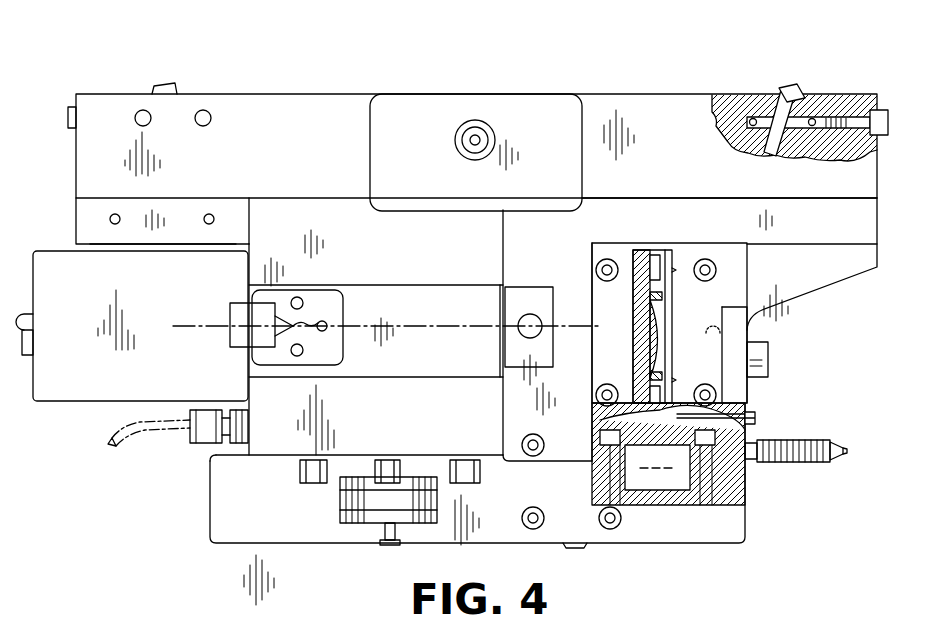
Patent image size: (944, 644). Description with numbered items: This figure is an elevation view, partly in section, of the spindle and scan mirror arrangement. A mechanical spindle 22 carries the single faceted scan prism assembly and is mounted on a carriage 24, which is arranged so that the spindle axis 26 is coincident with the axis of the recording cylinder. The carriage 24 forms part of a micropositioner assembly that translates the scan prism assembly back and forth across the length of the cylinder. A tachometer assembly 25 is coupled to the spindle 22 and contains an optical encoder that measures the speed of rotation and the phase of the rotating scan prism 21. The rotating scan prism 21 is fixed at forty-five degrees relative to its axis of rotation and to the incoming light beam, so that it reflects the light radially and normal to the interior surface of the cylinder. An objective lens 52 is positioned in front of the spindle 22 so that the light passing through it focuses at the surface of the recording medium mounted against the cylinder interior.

The rotating scan prism 21 is at (530, 314).
The mechanical spindle 22 is at (367, 308).
The carriage 24 is at (290, 110).
The tachometer assembly 25 is at (90, 383).
The spindle axis 26 is at (572, 332).
The objective lens 52 is at (657, 333).